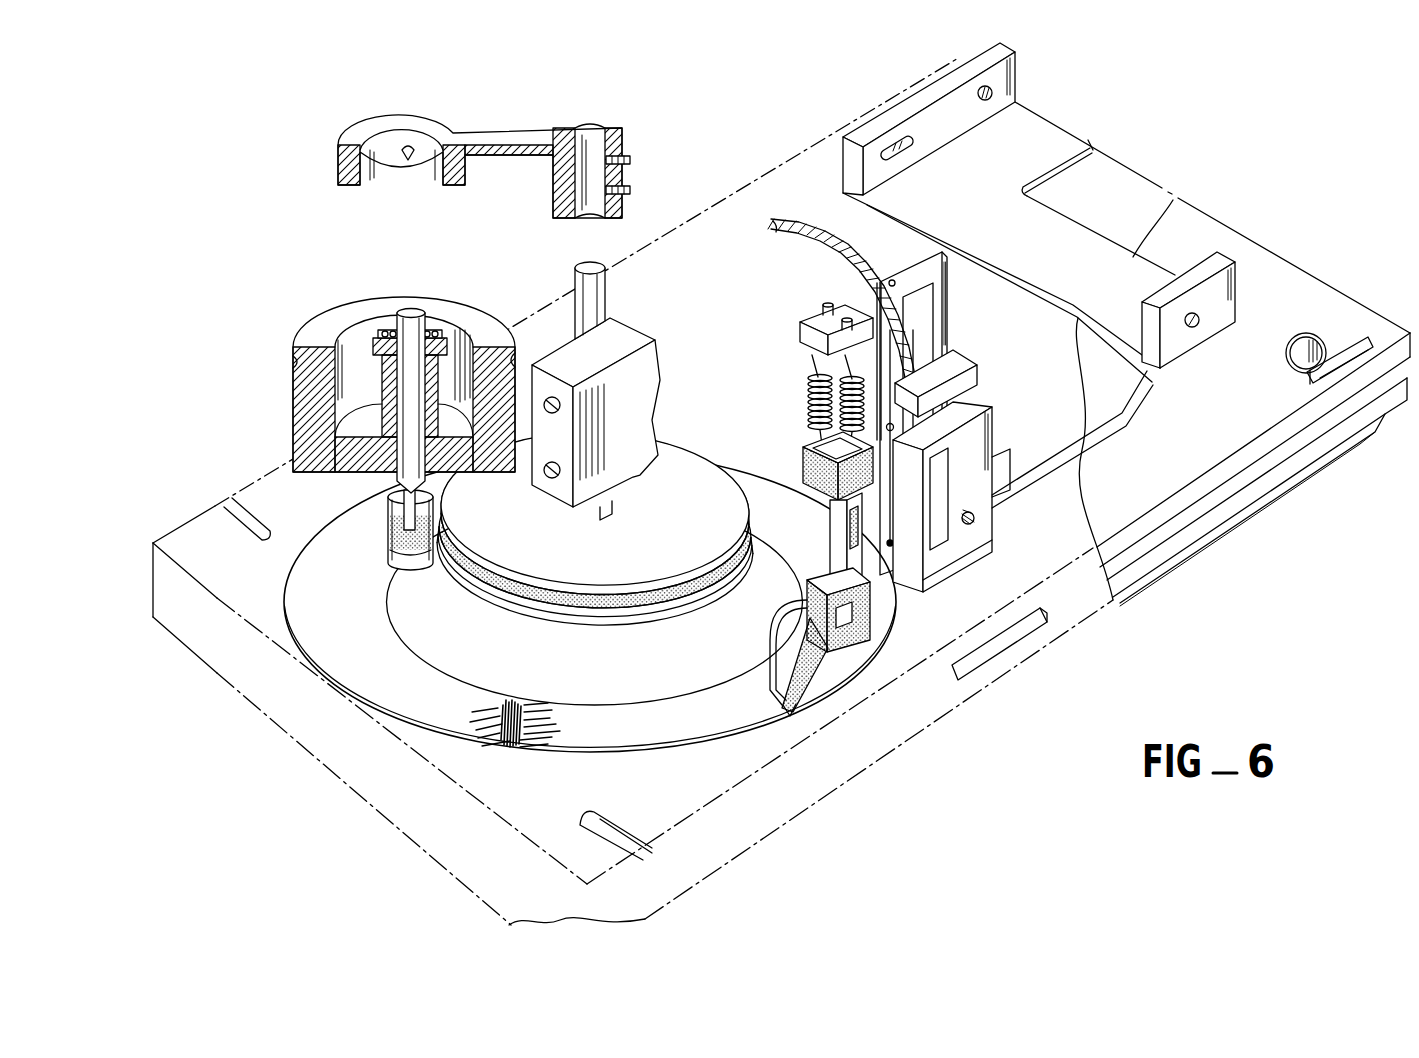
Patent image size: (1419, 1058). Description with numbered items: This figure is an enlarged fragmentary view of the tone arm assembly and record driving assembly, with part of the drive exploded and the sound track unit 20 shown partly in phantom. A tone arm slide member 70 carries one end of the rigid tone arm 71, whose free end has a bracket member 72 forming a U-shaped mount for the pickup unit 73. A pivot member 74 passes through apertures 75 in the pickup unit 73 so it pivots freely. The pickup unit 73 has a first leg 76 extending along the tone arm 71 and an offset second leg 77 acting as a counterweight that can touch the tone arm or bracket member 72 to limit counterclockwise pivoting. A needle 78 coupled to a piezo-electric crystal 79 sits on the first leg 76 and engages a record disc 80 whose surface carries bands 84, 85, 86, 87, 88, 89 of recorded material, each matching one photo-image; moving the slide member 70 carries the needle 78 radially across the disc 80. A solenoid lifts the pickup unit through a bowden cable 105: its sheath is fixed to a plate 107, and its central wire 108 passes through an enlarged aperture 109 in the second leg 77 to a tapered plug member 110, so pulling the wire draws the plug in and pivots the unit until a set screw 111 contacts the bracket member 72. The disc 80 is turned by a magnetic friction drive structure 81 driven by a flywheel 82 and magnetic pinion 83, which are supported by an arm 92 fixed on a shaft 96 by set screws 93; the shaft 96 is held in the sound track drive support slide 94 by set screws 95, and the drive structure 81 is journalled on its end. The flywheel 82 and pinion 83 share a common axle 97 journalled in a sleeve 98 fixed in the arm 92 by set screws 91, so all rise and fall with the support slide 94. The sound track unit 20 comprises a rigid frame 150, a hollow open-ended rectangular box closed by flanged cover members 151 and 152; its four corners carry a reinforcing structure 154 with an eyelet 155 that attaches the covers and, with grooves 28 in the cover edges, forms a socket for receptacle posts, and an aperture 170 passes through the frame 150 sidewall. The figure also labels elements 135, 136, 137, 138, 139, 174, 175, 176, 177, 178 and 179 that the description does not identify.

The sound track unit 20 is at (1204, 565).
The grooves 28 is at (1308, 378).
The tone arm slide member 70 is at (962, 202).
The tone arm 71 is at (1092, 442).
The bracket member 72 is at (940, 336).
The pickup unit 73 is at (1000, 419).
The pivot member 74 is at (884, 346).
The apertures 75 is at (922, 455).
The first leg 76 is at (803, 472).
The second leg 77 is at (975, 550).
The needle 78 is at (783, 714).
The piezo-electric crystal 79 is at (804, 533).
The record disc 80 is at (665, 749).
The magnetic friction drive structure 81 is at (678, 520).
The flywheel 82 is at (365, 374).
The magnetic pinion 83 is at (352, 534).
The band of recorded material 84 is at (520, 746).
The band of recorded material 85 is at (550, 748).
The band of recorded material 86 is at (480, 718).
The band of recorded material 87 is at (560, 727).
The band of recorded material 88 is at (505, 712).
The band of recorded material 89 is at (540, 708).
The set screws 91 is at (406, 148).
The arm 92 is at (508, 142).
The set screws 93 is at (632, 190).
The sound track drive support slide 94 is at (596, 388).
The set screws 95 is at (562, 464).
The shaft 96 is at (585, 293).
The common axle 97 is at (406, 311).
The sleeve 98 is at (380, 376).
The bowden cable 105 is at (790, 256).
The plate 107 is at (965, 368).
The central wire 108 is at (770, 226).
The enlarged aperture 109 is at (930, 422).
The plug member 110 is at (922, 495).
The set screw 111 is at (977, 518).
The pad 135 is at (480, 588).
The ring 136 is at (486, 556).
The ring 137 is at (400, 636).
The plug 138 is at (388, 512).
The abrasive 139 is at (396, 540).
The rigid frame 150 is at (1410, 333).
The flanged cover member 151 is at (1258, 243).
The flanged cover member 152 is at (1385, 420).
The reinforcing structure 154 is at (1345, 372).
The eyelet 155 is at (1318, 346).
The aperture 170 is at (1015, 645).
The block 174 is at (885, 617).
The wire 175 is at (775, 630).
The block 176 is at (794, 453).
The springs 177 is at (848, 406).
The block 178 is at (800, 332).
The slot 179 is at (849, 527).